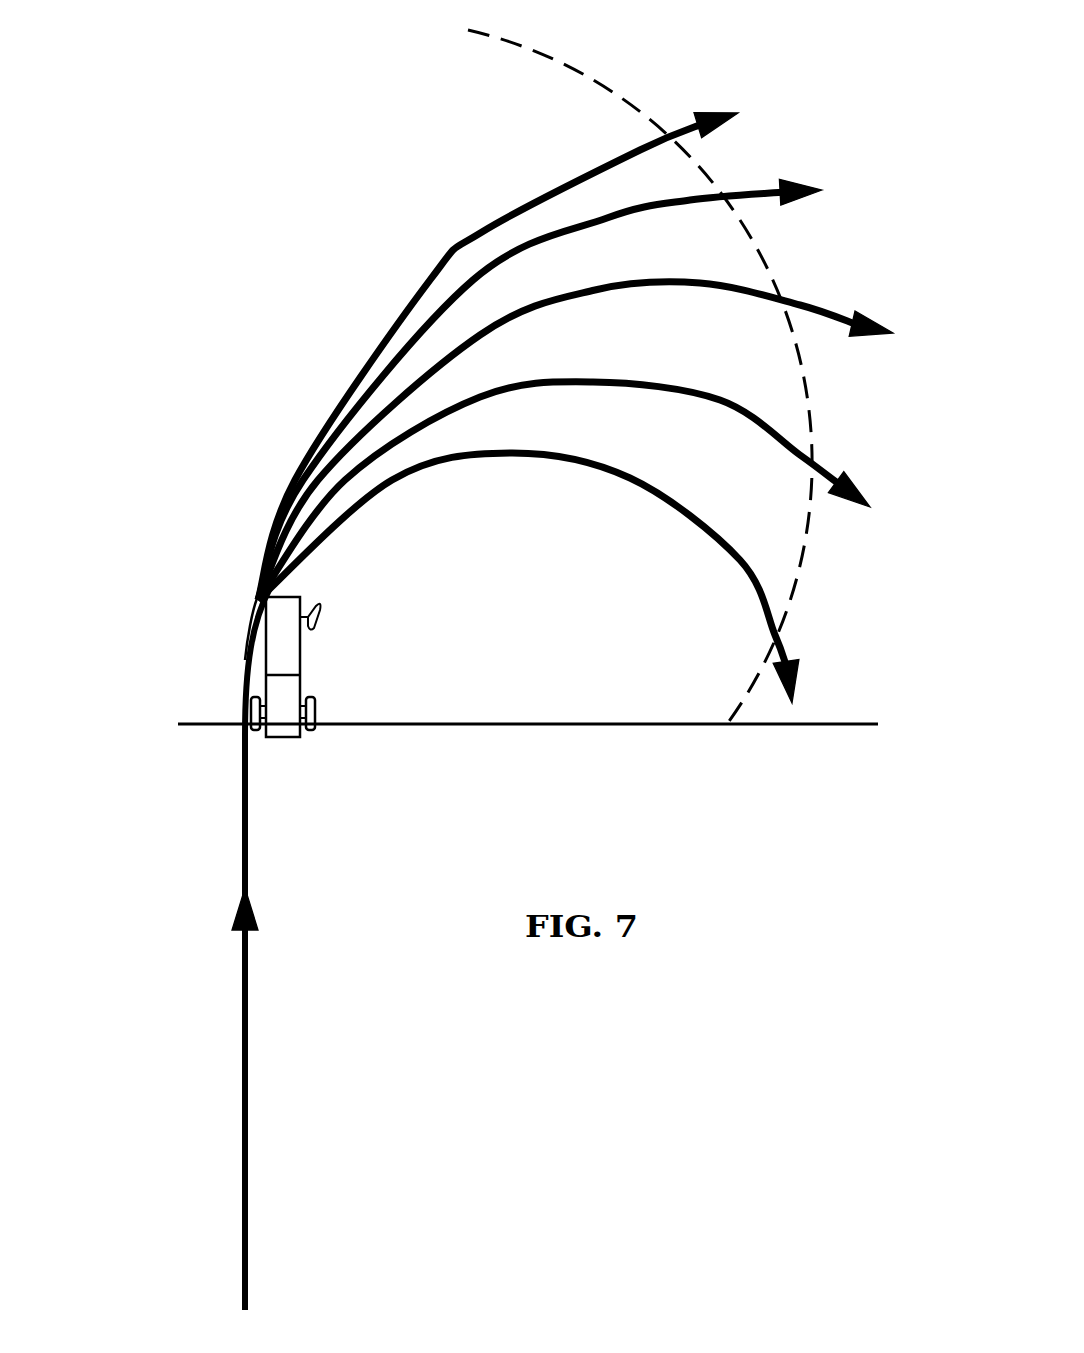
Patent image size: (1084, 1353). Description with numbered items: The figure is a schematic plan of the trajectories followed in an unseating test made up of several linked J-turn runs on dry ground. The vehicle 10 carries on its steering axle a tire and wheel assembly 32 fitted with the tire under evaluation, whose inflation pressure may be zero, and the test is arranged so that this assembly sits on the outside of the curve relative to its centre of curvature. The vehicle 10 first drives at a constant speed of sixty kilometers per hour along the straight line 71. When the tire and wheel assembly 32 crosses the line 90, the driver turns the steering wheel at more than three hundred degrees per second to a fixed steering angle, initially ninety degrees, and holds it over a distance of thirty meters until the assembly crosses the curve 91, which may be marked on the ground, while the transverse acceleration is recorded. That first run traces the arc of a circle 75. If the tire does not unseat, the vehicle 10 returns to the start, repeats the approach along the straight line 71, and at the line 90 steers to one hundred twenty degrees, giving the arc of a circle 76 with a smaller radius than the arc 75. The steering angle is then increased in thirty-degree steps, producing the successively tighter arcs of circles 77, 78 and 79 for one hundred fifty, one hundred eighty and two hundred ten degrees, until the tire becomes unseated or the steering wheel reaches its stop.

The vehicle 10 is at (286, 667).
The tire and wheel assembly 32 is at (250, 603).
The straight line 71 is at (240, 1020).
The arc of a circle 75 is at (482, 232).
The arc of a circle 76 is at (607, 216).
The arc of a circle 77 is at (595, 290).
The arc of a circle 78 is at (593, 386).
The arc of a circle 79 is at (630, 480).
The line 90 is at (405, 726).
The curve 91 is at (590, 75).